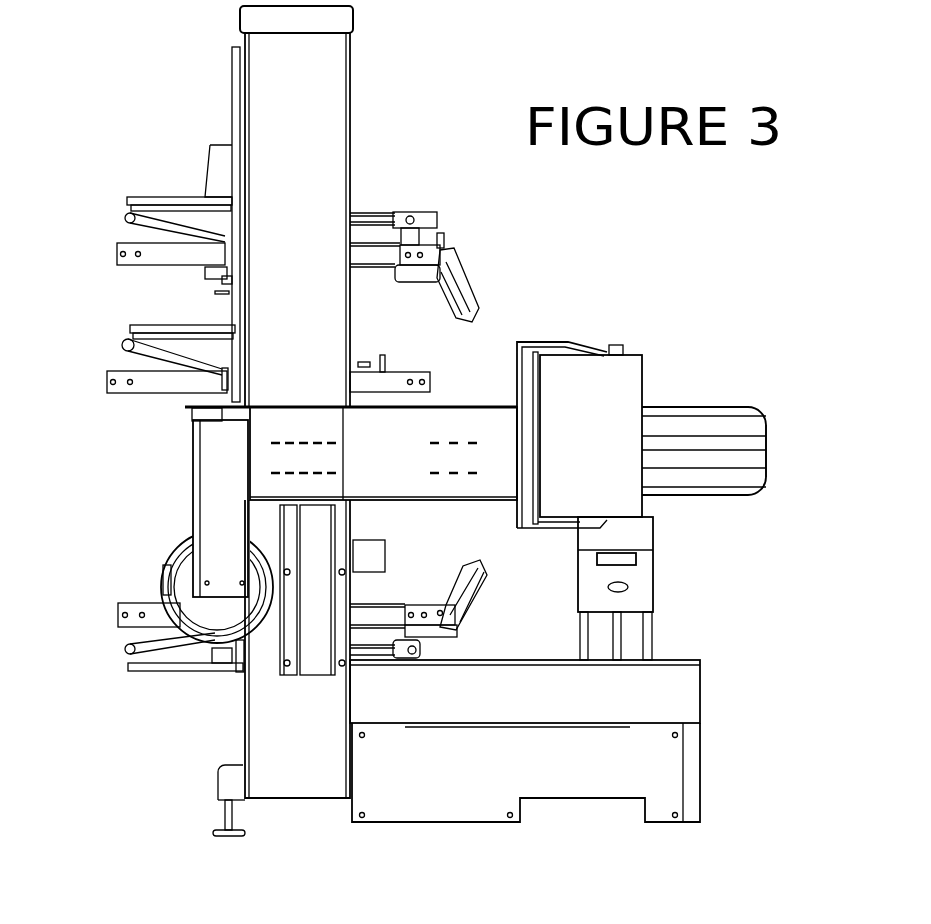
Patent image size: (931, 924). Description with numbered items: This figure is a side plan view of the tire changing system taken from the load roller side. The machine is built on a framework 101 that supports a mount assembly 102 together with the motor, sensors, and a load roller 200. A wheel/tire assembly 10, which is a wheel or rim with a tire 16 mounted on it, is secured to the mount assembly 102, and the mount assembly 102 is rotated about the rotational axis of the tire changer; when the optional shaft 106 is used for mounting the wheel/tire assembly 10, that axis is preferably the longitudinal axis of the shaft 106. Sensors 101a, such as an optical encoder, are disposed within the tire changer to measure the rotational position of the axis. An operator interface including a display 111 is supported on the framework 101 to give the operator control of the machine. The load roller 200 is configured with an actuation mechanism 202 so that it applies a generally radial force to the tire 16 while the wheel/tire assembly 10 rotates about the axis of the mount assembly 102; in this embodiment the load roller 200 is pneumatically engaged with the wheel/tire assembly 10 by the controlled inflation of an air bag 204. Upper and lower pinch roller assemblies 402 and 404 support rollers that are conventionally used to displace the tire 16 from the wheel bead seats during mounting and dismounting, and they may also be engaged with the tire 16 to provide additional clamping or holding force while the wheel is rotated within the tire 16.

The wheel/tire assembly 10 is at (784, 434).
The tire 16 is at (705, 405).
The framework 101 is at (328, 105).
The sensors 101a is at (625, 560).
The mount assembly 102 is at (669, 588).
The shaft 106 is at (623, 347).
The display 111 is at (222, 175).
The load roller 200 is at (620, 395).
The actuation mechanism 202 is at (168, 508).
The air bag 204 is at (205, 625).
The upper pinch roller assembly 402 is at (375, 262).
The lower pinch roller assembly 404 is at (382, 610).